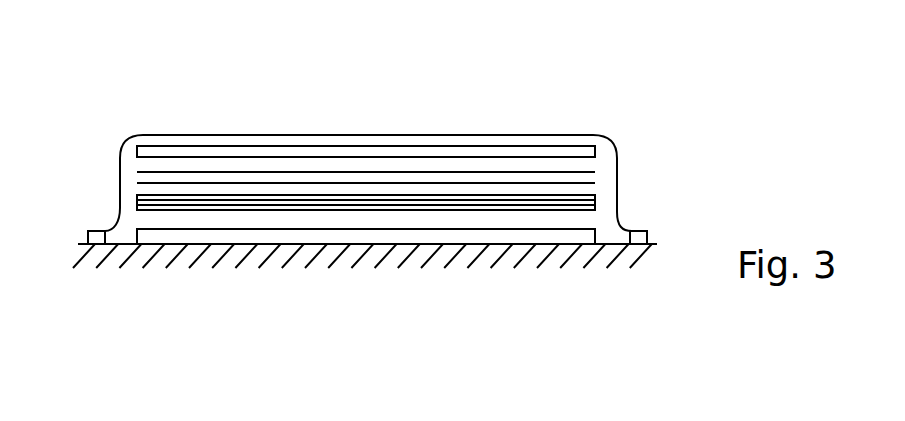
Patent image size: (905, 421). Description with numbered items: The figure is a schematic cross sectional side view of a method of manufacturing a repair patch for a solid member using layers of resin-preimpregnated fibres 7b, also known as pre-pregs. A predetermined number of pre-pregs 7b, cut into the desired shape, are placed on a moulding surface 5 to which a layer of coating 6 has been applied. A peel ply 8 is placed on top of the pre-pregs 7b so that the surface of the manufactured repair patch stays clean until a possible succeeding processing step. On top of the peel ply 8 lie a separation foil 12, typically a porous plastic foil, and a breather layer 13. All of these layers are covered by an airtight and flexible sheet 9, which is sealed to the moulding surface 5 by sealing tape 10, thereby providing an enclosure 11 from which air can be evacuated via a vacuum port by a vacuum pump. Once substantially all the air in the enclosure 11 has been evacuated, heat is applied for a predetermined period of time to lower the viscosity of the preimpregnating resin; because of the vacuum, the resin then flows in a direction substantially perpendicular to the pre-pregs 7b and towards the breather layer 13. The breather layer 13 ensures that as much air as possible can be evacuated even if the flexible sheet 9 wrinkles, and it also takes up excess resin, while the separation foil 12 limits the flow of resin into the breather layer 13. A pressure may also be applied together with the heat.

The moulding surface 5 is at (175, 308).
The layer of coating 6 is at (478, 238).
The resin-preimpregnated fibres 7b is at (595, 198).
The peel ply 8 is at (592, 181).
The flexible sheet 9 is at (420, 135).
The sealing tape 10 is at (96, 238).
The enclosure 11 is at (183, 142).
The separation foil 12 is at (593, 171).
The breather layer 13 is at (562, 150).